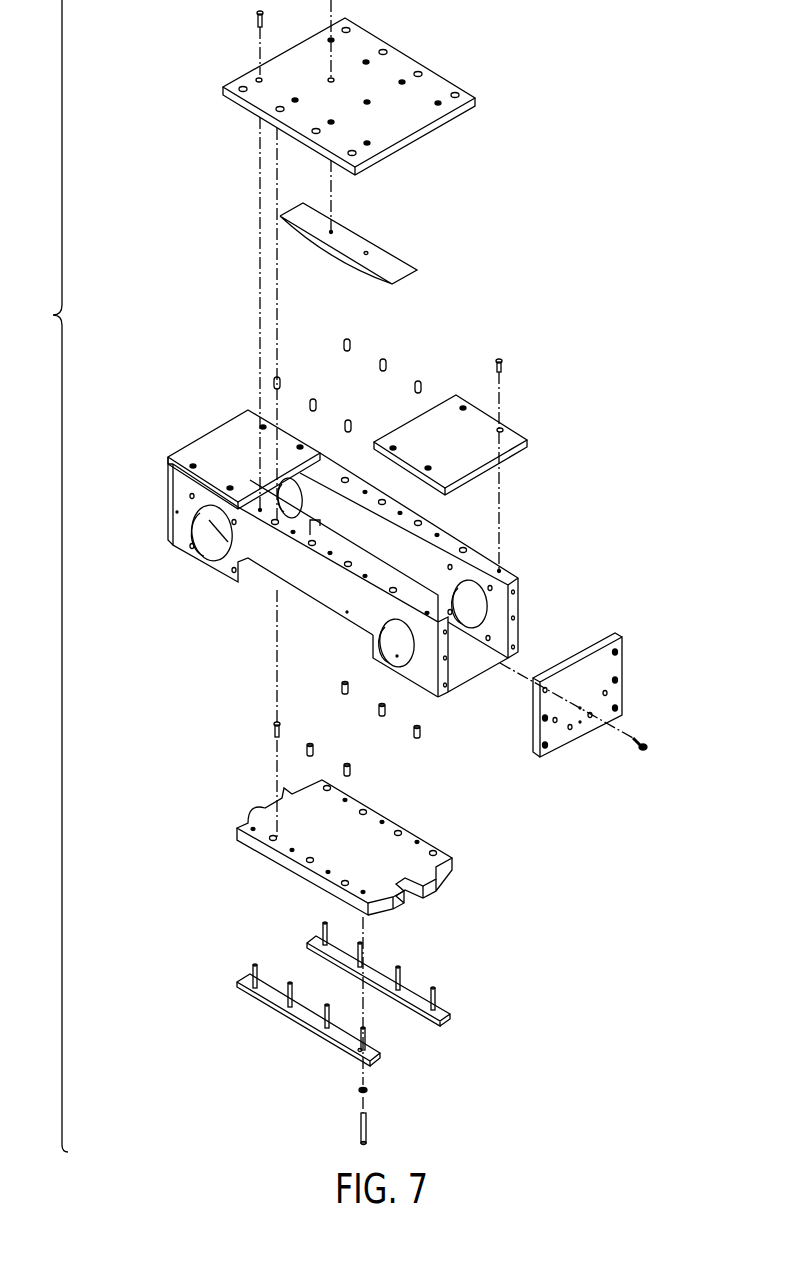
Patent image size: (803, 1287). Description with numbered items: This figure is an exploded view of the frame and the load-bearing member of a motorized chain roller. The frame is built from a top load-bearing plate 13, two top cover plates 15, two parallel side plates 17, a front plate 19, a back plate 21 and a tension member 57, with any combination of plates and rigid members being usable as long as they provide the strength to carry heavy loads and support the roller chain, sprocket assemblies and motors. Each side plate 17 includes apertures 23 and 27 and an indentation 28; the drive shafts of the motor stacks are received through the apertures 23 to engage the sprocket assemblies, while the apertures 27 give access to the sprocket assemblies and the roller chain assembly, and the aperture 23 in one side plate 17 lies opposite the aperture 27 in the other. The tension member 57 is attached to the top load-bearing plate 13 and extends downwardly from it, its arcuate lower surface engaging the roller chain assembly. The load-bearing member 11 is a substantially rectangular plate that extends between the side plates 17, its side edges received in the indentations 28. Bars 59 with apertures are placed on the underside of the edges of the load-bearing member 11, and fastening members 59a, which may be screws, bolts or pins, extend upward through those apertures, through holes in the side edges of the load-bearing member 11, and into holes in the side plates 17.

The load-bearing member 11 is at (412, 853).
The top load-bearing plate 13 is at (438, 75).
The top cover plates 15 is at (215, 437).
The side plates 17 is at (339, 575).
The front plate 19 is at (618, 660).
The back plate 21 is at (168, 475).
The apertures 23 is at (207, 558).
The apertures 27 is at (458, 610).
The indentation 28 is at (373, 643).
The tension member 57 is at (405, 270).
The bars 59 is at (343, 998).
The fastening members 59a is at (250, 967).